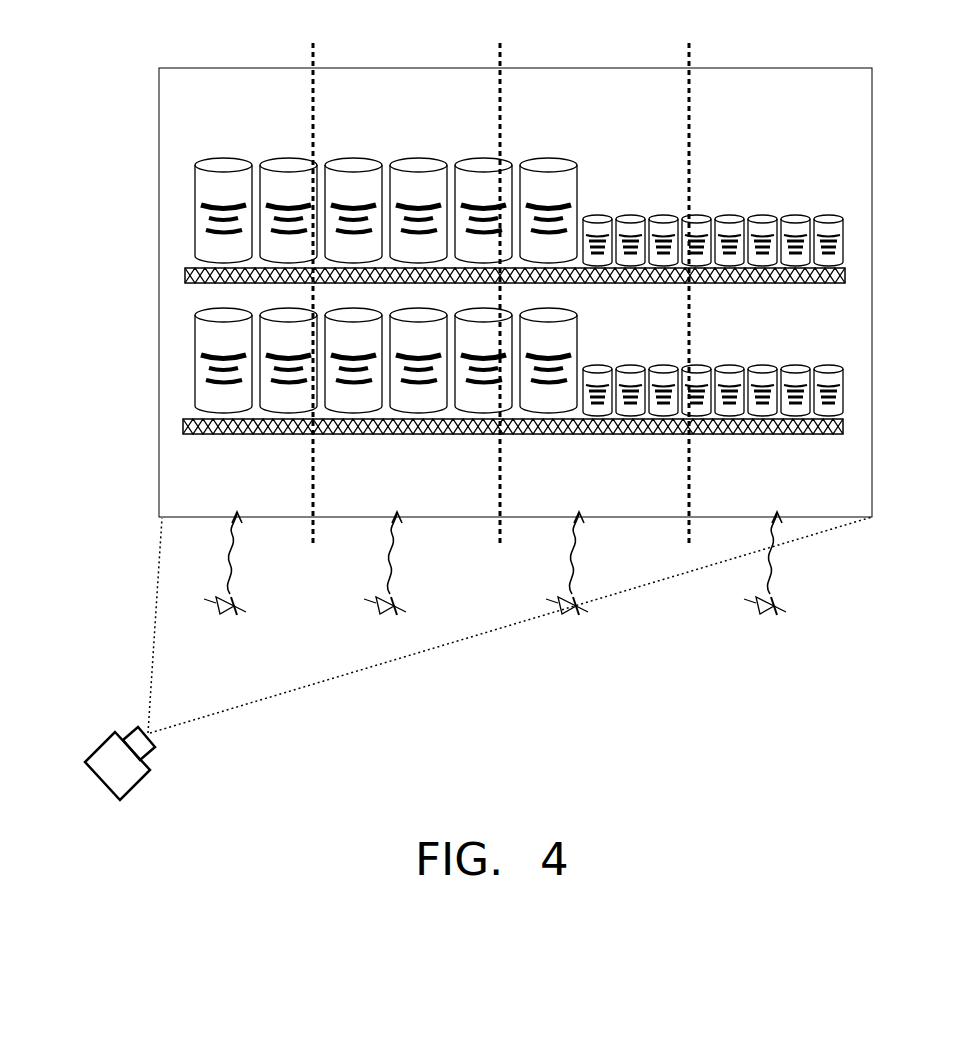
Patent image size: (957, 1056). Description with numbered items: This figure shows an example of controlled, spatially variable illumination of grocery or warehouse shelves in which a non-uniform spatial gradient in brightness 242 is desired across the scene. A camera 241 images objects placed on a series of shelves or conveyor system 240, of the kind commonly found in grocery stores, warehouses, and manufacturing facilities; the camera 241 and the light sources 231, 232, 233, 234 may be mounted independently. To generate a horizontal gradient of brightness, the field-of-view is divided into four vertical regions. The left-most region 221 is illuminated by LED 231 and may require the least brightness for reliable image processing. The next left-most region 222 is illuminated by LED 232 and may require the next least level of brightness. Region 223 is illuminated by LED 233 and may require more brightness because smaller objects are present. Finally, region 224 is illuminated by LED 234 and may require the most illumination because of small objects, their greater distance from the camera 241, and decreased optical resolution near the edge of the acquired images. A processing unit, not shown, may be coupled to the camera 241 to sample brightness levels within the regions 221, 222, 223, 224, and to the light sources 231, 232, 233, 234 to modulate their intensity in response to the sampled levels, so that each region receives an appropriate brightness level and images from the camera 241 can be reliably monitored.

The left-most region 221 is at (237, 60).
The next left-most region 222 is at (410, 60).
The region 223 is at (608, 60).
The region 224 is at (789, 60).
The LED 231 is at (222, 624).
The LED 232 is at (390, 624).
The LED 233 is at (569, 624).
The LED 234 is at (767, 624).
The shelves or conveyor system 240 is at (213, 440).
The camera 241 is at (140, 803).
The spatial gradient in brightness 242 is at (188, 114).